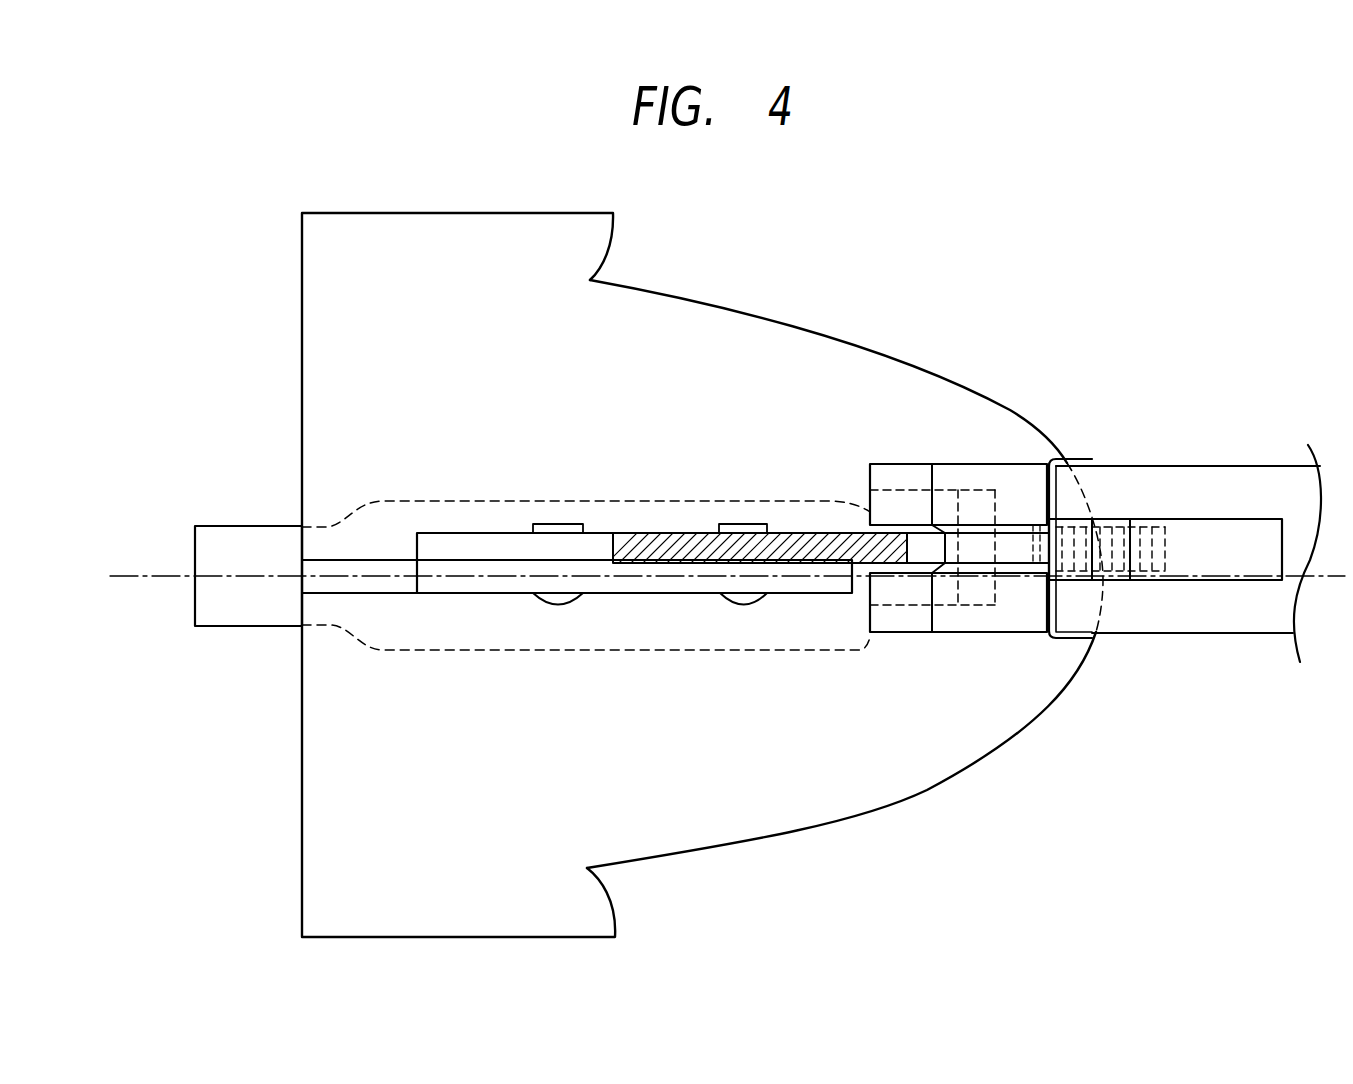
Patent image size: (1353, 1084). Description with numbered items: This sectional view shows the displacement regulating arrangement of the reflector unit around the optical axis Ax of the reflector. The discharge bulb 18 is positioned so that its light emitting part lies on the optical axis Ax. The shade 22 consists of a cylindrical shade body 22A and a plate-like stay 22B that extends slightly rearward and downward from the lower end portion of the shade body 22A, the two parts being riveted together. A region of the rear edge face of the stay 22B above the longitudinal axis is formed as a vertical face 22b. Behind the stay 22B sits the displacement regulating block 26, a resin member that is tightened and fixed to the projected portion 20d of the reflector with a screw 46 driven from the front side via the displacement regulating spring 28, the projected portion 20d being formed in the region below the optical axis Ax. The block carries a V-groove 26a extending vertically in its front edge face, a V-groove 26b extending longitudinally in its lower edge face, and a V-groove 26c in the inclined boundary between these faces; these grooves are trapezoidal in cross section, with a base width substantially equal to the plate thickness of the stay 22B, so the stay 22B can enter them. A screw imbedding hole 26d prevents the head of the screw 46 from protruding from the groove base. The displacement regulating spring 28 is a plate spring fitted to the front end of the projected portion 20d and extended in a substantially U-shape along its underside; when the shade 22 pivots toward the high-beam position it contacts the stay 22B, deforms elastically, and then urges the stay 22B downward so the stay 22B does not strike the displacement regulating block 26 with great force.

The shade 22 is at (296, 281).
The shade body 22A is at (760, 323).
The stay 22B is at (500, 532).
The vertical face 22b is at (937, 533).
The discharge bulb 18 is at (630, 499).
The displacement regulating block 26 is at (959, 503).
The V-groove 26a is at (890, 550).
The V-groove 26b is at (975, 557).
The V-groove 26c is at (930, 553).
The screw imbedding hole 26d is at (903, 488).
The displacement regulating spring 28 is at (1217, 515).
The screw 46 is at (1165, 540).
The projected portion 20d is at (1150, 482).
The optical axis Ax is at (158, 575).